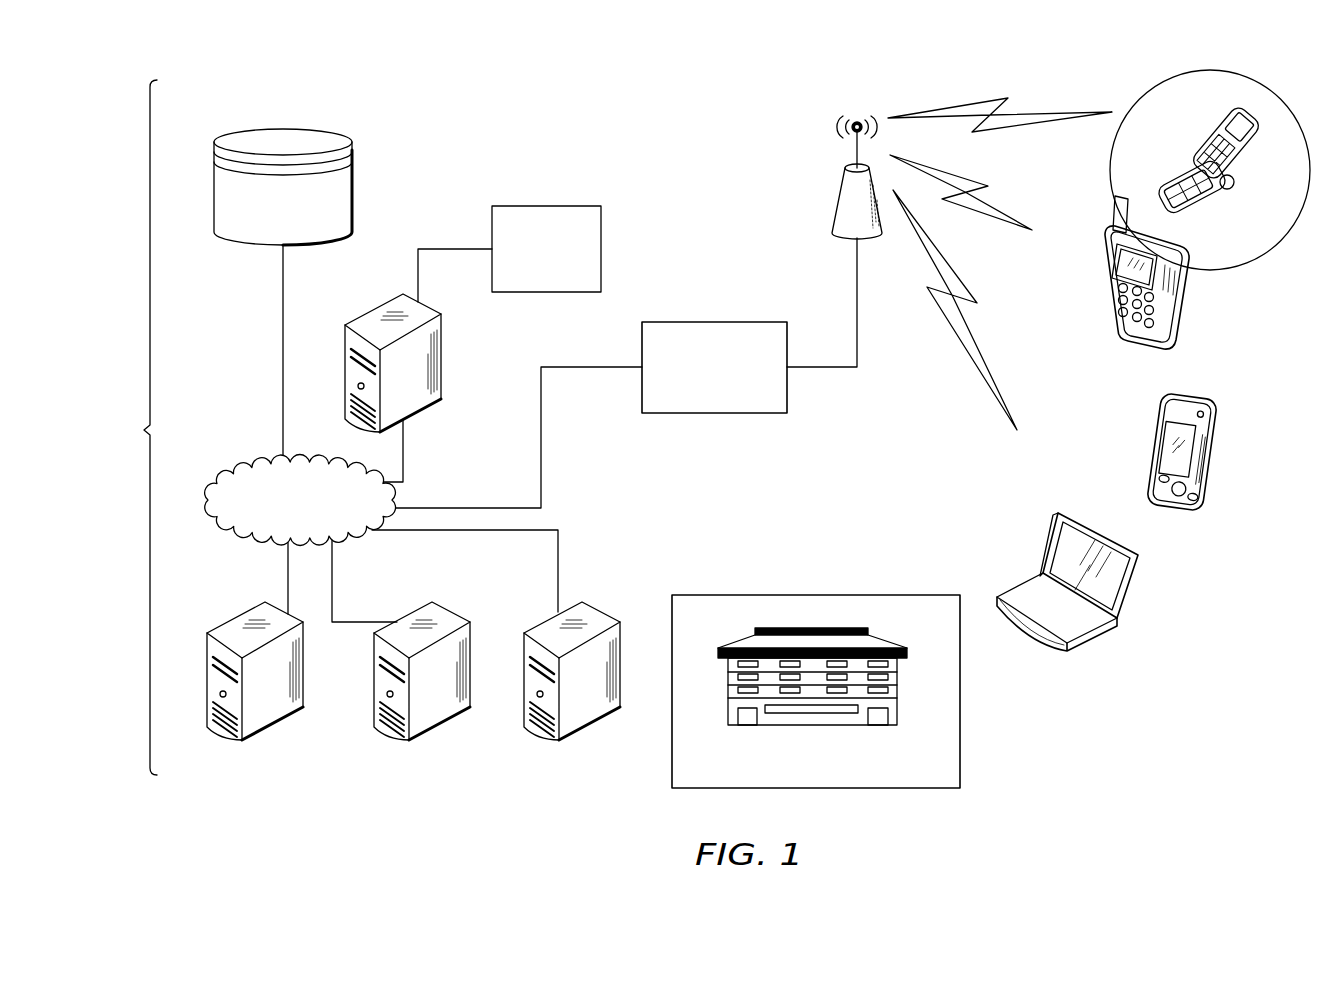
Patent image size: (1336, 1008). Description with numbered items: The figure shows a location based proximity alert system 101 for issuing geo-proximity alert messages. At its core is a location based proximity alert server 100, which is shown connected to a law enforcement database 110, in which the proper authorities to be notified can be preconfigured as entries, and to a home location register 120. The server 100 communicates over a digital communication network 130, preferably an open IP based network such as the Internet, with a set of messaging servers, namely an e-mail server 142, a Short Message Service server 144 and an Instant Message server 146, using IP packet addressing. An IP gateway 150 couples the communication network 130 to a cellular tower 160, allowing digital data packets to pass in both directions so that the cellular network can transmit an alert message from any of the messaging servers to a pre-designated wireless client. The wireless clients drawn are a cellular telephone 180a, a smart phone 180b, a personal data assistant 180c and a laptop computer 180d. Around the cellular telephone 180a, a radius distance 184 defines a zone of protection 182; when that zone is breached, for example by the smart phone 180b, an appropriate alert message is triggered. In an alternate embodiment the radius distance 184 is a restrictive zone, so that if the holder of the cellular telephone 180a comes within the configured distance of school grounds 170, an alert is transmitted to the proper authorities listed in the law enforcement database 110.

The location based proximity alert system 101 is at (133, 427).
The law enforcement database 110 is at (355, 183).
The home location register 120 is at (582, 206).
The location based proximity alert server 100 is at (443, 356).
The IP gateway 150 is at (762, 322).
The cellular tower 160 is at (845, 195).
The communication network 130 is at (300, 500).
The e-mail server 142 is at (244, 691).
The Short Message Service server 144 is at (410, 691).
The Instant Message server 146 is at (568, 691).
The school grounds 170 is at (962, 715).
The cellular telephone 180a is at (1163, 187).
The smart phone 180b is at (1118, 280).
The personal data assistant 180c is at (1147, 452).
The laptop computer 180d is at (1052, 555).
The zone of protection 182 is at (1220, 268).
The radius distance 184 is at (1241, 172).